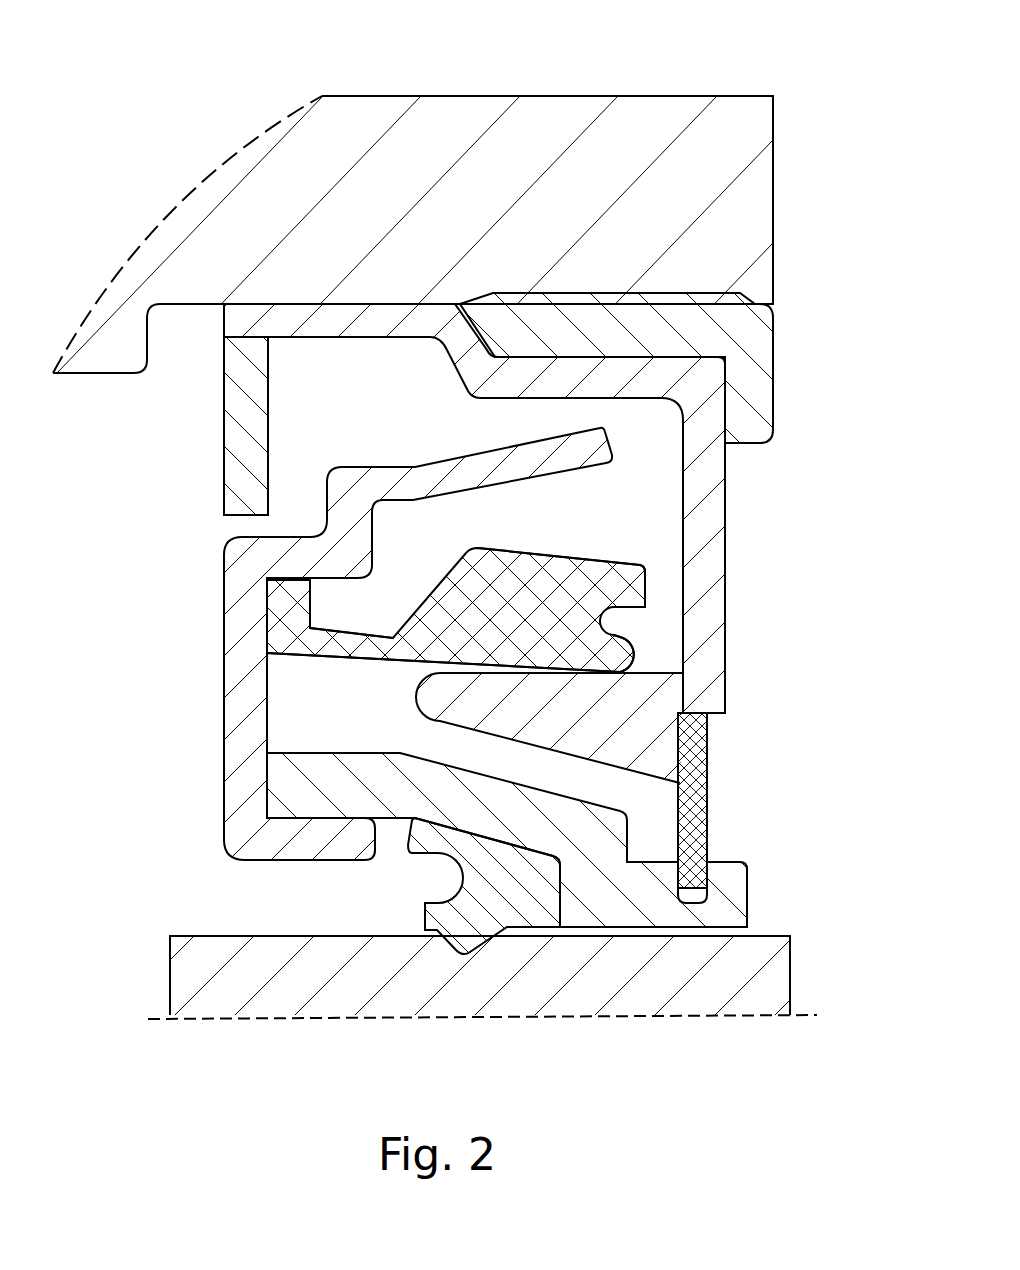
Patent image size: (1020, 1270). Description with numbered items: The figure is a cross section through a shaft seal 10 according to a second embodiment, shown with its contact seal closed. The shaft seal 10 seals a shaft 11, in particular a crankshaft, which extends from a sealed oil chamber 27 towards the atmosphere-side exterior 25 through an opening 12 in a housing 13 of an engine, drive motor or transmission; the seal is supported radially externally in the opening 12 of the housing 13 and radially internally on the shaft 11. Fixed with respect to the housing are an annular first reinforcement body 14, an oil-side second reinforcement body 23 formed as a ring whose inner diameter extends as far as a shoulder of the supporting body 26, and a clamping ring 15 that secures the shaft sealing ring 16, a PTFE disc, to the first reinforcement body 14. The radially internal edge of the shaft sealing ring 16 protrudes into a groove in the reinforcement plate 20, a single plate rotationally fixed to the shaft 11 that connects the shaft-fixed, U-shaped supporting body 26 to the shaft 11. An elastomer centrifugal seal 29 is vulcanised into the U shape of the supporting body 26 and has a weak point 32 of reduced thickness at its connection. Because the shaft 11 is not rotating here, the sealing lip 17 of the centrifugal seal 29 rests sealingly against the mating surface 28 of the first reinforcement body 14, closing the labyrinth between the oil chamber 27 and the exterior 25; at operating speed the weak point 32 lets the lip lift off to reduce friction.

The shaft seal 10 is at (165, 541).
The shaft 11 is at (524, 1000).
The opening 12 is at (165, 833).
The housing 13 is at (557, 130).
The first reinforcement body 14 is at (345, 318).
The clamping ring 15 is at (585, 323).
The shaft sealing ring 16 is at (697, 768).
The sealing lip 17 is at (620, 674).
The reinforcement plate 20 is at (612, 905).
The second reinforcement body 23 is at (242, 427).
The atmosphere-side exterior 25 is at (780, 606).
The supporting body 26 is at (232, 627).
The oil chamber 27 is at (76, 627).
The mating surface 28 is at (650, 668).
The centrifugal seal 29 is at (598, 590).
The weak point 32 is at (353, 642).